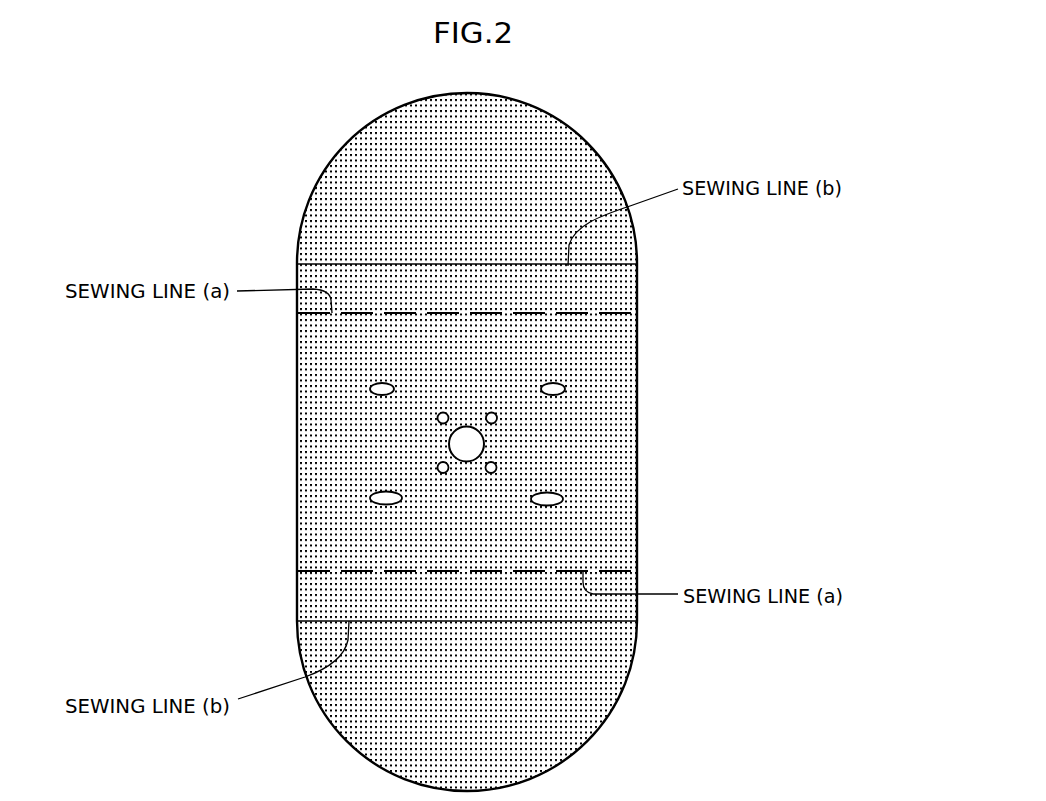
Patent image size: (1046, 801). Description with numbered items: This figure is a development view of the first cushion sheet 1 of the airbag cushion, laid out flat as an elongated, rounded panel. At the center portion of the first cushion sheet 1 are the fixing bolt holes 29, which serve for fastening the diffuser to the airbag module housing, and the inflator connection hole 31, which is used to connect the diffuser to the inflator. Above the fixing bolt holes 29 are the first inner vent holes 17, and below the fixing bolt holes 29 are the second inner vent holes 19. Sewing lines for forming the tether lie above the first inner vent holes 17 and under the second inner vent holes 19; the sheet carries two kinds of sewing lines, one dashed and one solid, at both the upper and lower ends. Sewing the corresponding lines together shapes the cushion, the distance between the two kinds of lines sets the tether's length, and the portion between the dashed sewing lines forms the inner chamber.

The first cushion sheet 1 is at (356, 192).
The first inner vent holes 17 is at (382, 383).
The second inner vent holes 19 is at (547, 505).
The fixing bolt holes 29 is at (437, 417).
The inflator connection hole 31 is at (476, 444).